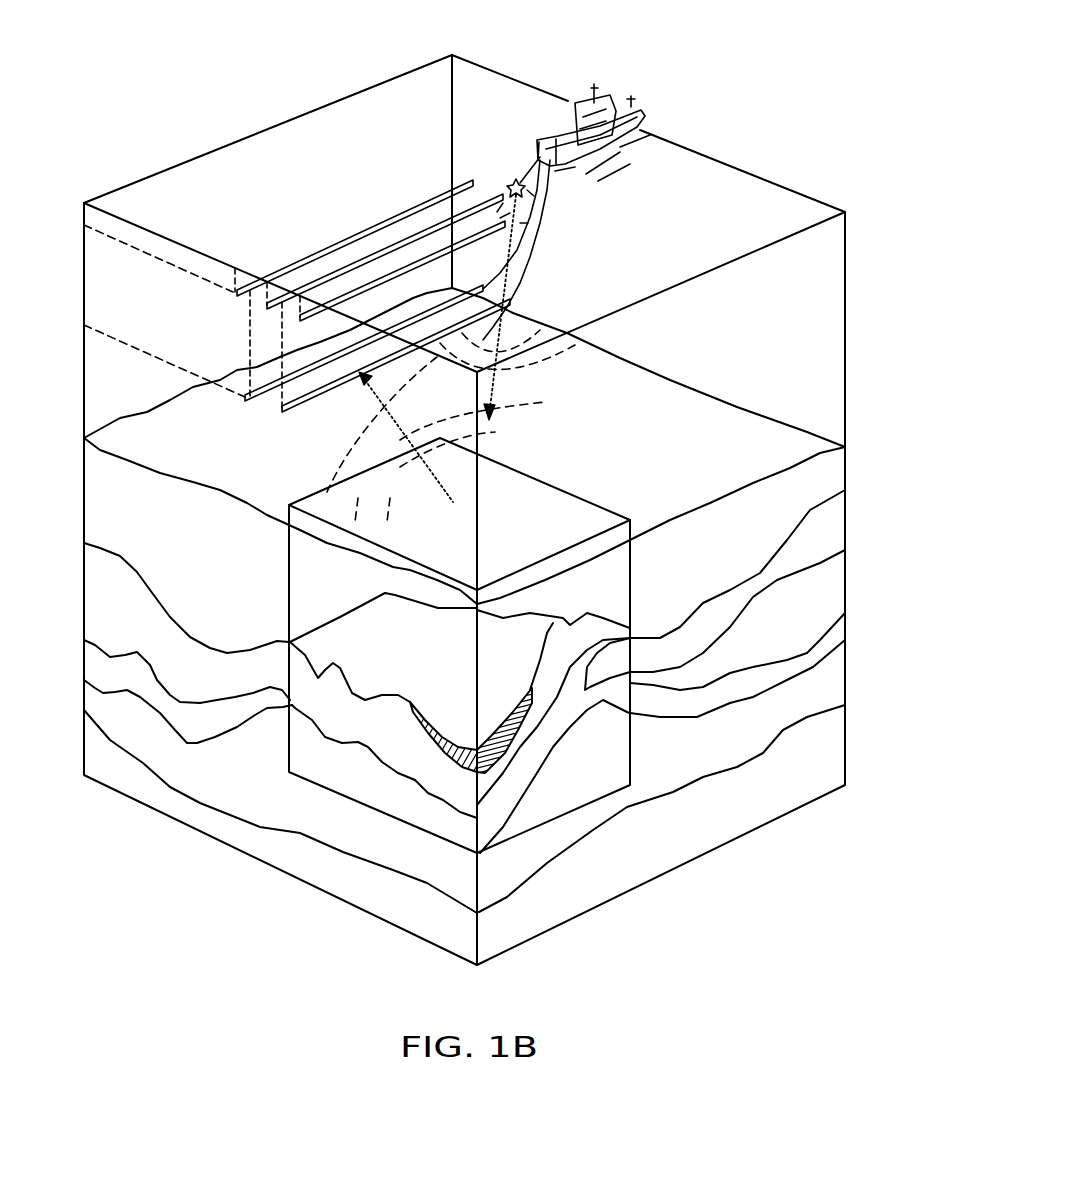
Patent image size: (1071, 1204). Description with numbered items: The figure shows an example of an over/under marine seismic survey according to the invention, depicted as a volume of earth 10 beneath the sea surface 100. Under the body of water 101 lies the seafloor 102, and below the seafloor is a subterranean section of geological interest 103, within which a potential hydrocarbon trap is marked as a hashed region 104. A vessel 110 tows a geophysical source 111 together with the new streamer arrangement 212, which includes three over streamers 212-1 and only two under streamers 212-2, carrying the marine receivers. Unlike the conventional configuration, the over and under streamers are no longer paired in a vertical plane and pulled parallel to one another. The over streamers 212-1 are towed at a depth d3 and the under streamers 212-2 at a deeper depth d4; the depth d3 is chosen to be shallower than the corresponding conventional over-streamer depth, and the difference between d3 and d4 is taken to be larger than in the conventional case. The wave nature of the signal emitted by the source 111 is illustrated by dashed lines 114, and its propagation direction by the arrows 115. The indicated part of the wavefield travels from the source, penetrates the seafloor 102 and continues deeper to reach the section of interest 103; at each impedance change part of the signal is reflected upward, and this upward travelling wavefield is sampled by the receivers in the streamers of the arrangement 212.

The volume of earth 10 is at (686, 55).
The sea surface 100 is at (733, 182).
The body of water 101 is at (766, 340).
The seafloor 102 is at (741, 411).
The subterranean section of geological interest 103 is at (549, 486).
The potential hydrocarbon trap 104 is at (443, 741).
The vessel 110 is at (603, 106).
The geophysical source 111 is at (510, 188).
The dashed lines 114 is at (542, 376).
The arrows 115 is at (497, 323).
The streamer arrangement 212 is at (318, 224).
The over streamers 212-1 is at (417, 232).
The under streamers 212-2 is at (279, 408).
The depth of over streamers d3 is at (147, 278).
The depth of under streamers d4 is at (138, 352).